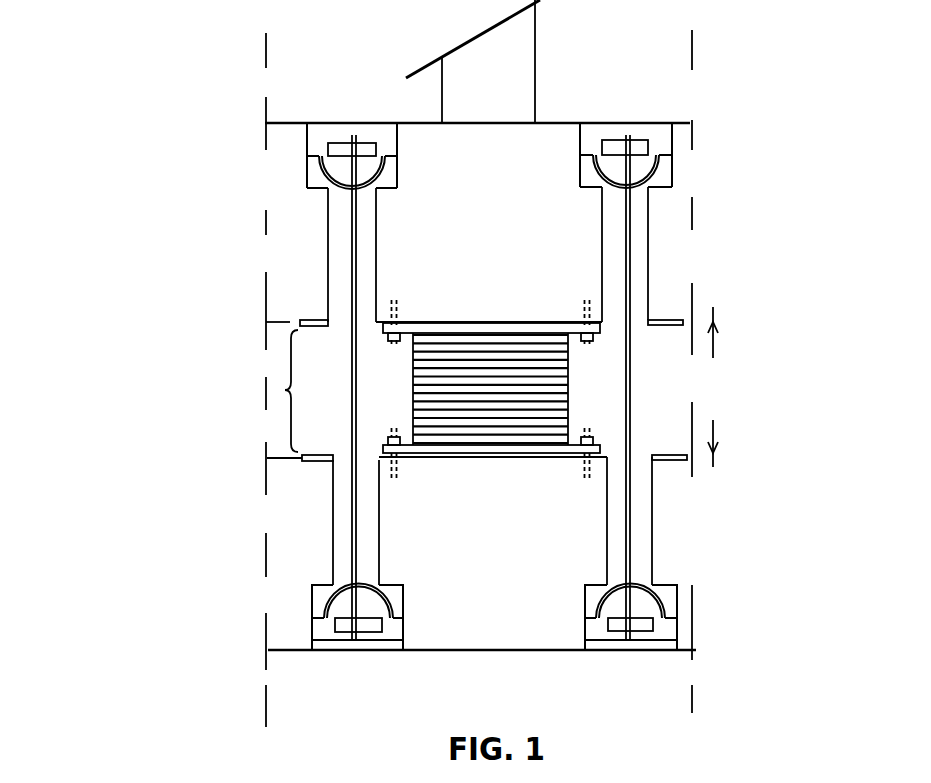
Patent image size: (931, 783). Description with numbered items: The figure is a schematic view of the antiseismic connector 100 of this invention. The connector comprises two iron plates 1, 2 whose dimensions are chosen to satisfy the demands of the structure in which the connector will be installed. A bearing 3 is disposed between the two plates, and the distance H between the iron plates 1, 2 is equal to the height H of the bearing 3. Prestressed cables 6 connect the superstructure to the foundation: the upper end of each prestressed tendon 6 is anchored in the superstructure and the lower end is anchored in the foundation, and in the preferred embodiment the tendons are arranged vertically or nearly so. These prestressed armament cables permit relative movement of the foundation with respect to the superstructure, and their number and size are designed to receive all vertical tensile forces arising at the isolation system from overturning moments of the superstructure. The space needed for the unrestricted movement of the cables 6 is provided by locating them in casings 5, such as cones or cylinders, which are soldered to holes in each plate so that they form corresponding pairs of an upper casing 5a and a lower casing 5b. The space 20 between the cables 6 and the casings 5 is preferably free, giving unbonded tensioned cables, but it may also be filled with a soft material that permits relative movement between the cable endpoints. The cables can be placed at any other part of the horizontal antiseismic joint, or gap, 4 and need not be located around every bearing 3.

The antiseismic connector 100 is at (247, 243).
The iron plate 1 is at (430, 323).
The iron plate 2 is at (557, 455).
The bearing 3 is at (527, 407).
The horizontal antiseismic joint (gap) 4 is at (281, 391).
The casing 5 is at (650, 208).
The upper casing 5a is at (377, 257).
The lower casing 5b is at (382, 562).
The prestressed cable 6 is at (353, 518).
The space 20 is at (640, 248).
The distance (height) H is at (715, 387).